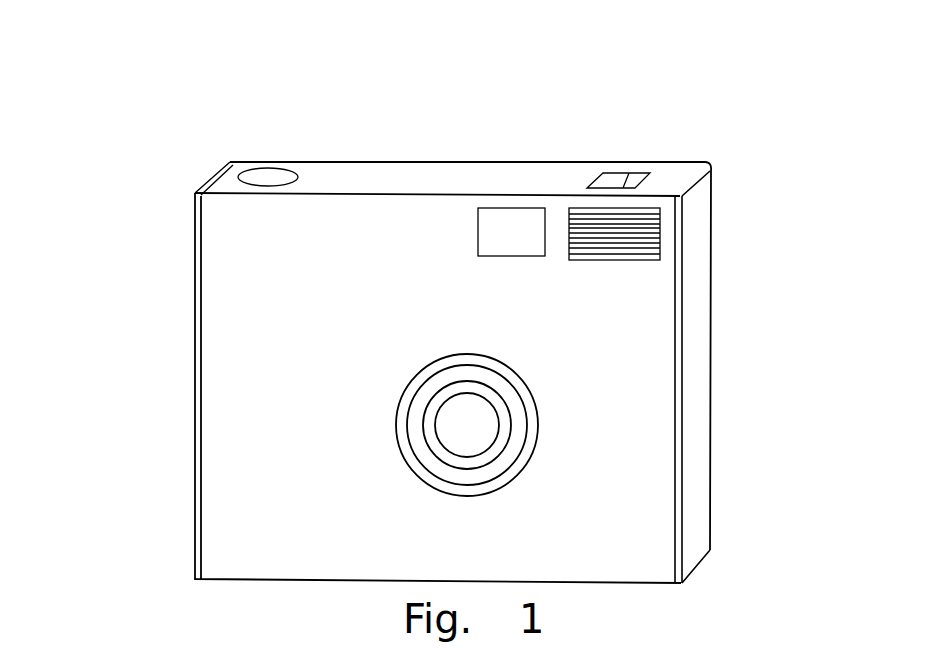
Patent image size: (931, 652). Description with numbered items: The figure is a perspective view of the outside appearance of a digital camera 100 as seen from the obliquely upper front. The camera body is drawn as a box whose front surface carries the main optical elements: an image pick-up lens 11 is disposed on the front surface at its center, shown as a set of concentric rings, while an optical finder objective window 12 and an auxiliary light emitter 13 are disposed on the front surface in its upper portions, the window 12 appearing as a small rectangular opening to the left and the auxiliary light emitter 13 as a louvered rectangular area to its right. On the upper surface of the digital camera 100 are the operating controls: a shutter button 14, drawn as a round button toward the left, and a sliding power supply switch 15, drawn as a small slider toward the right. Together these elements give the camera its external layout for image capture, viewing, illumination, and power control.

The digital camera 100 is at (141, 129).
The image pick-up lens 11 is at (468, 433).
The optical finder objective window 12 is at (496, 222).
The auxiliary light emitter 13 is at (582, 218).
The shutter button 14 is at (263, 168).
The sliding power supply switch 15 is at (612, 180).